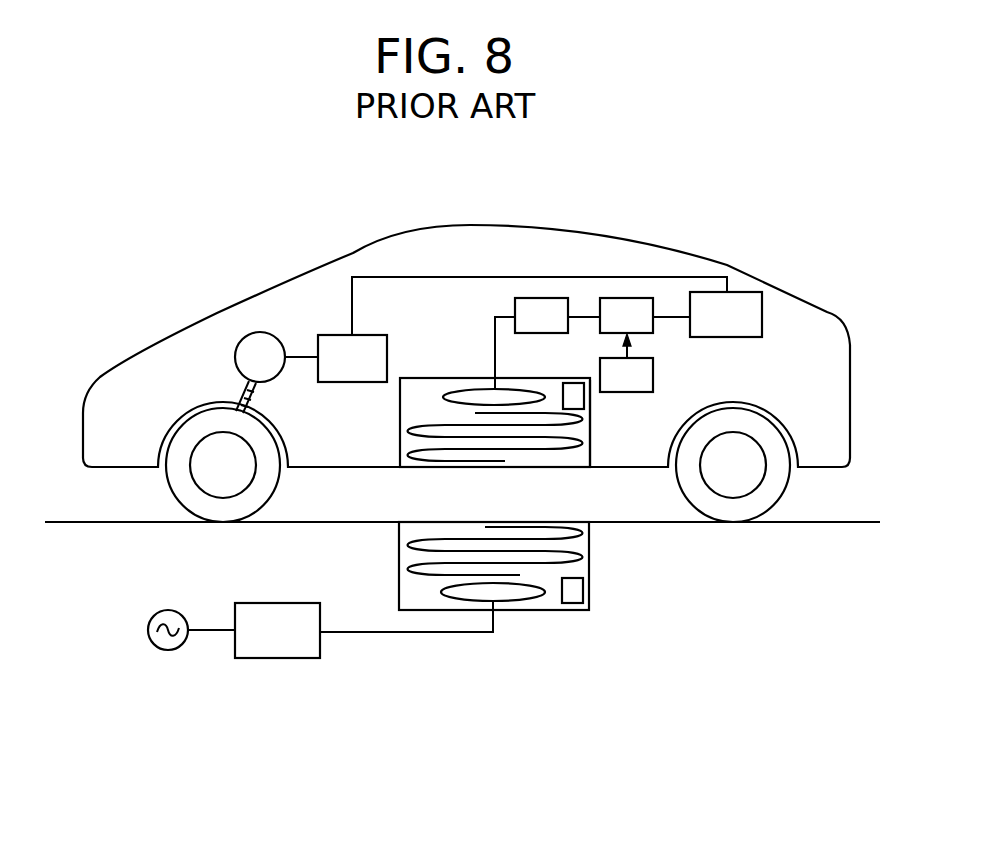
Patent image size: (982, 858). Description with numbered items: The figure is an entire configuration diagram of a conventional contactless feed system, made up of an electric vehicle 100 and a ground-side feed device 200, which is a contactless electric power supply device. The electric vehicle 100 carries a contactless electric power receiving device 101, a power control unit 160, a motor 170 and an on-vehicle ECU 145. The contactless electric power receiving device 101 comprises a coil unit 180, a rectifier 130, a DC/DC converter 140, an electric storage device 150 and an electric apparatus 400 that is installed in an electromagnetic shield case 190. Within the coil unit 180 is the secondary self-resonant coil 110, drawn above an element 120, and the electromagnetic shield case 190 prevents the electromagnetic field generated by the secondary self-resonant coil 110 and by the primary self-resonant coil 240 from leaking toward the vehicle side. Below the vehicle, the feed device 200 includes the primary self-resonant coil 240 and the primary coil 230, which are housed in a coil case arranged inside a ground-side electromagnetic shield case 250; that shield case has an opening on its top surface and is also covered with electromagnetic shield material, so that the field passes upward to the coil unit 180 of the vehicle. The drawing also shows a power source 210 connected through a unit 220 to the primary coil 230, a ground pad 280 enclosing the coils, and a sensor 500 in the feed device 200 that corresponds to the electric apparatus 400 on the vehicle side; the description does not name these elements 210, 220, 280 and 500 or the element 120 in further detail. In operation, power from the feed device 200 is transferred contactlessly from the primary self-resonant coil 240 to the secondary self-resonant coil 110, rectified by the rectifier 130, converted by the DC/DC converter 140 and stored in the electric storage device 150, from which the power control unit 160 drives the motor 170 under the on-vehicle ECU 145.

The electric vehicle 100 is at (558, 231).
The contactless electric power receiving device 101 is at (633, 272).
The secondary self-resonant coil 110 is at (413, 440).
The ferrite core 120 is at (470, 390).
The rectifier 130 is at (540, 334).
The DC/DC converter 140 is at (640, 333).
The on-vehicle ECU 145 is at (653, 378).
The electric storage device 150 is at (762, 318).
The power control unit 160 is at (328, 335).
The motor 170 is at (235, 357).
The coil unit 180 is at (593, 447).
The electromagnetic shield case 190 is at (400, 400).
The electric apparatus 400 is at (584, 398).
The feed device 200 is at (397, 662).
The AC power source 210 is at (172, 608).
The power converter 220 is at (275, 603).
The primary coil 230 is at (518, 601).
The primary self-resonant coil 240 is at (410, 551).
The electromagnetic shield case 250 is at (399, 590).
The transmitting pad 280 is at (590, 549).
The transmitting side sensor 500 is at (583, 590).